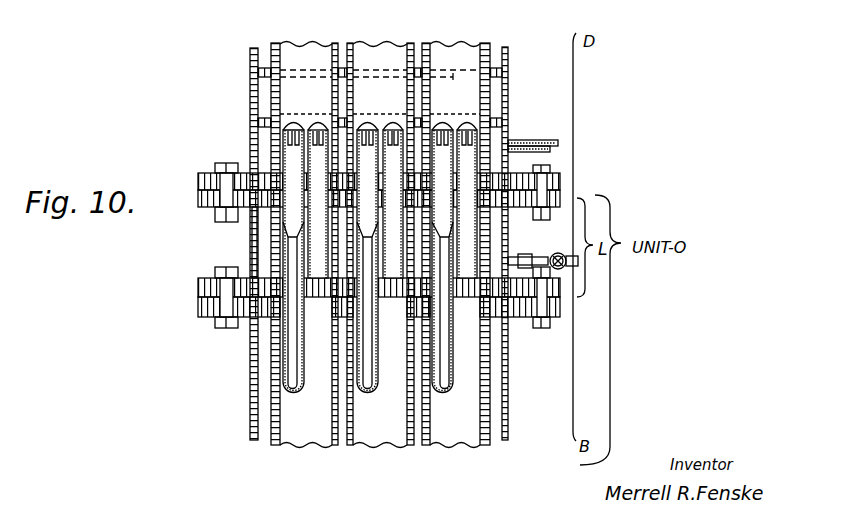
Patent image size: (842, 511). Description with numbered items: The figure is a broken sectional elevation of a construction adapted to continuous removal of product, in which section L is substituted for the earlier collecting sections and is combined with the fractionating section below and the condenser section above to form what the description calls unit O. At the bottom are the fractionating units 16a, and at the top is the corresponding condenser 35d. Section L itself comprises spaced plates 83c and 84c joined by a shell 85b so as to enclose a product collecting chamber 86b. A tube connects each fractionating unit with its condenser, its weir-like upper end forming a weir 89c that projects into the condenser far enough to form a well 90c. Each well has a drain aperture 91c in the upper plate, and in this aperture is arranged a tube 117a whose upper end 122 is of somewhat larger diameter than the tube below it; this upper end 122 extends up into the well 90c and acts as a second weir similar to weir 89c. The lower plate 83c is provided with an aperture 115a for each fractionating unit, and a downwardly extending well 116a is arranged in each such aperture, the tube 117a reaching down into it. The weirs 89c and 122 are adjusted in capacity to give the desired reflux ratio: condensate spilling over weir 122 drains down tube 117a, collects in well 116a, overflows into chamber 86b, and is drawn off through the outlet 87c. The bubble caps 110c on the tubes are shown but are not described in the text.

The condenser 35d is at (487, 93).
The weir 89c is at (490, 134).
The well 90c is at (508, 144).
The bubble cap tube 110c is at (318, 121).
The upper end of tube 117a 122 is at (282, 160).
The plate 84c is at (198, 200).
The shell 85b is at (250, 222).
The aperture 91c is at (258, 242).
The tube 117a is at (290, 224).
The product collecting chamber 86b is at (268, 250).
The aperture 115a is at (288, 280).
The plate 83c is at (198, 285).
The outlet 87c is at (534, 257).
The well 116a is at (300, 394).
The fractionating unit 16a is at (272, 428).